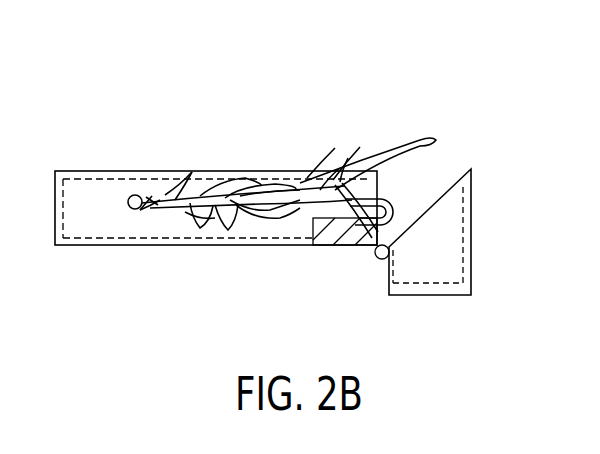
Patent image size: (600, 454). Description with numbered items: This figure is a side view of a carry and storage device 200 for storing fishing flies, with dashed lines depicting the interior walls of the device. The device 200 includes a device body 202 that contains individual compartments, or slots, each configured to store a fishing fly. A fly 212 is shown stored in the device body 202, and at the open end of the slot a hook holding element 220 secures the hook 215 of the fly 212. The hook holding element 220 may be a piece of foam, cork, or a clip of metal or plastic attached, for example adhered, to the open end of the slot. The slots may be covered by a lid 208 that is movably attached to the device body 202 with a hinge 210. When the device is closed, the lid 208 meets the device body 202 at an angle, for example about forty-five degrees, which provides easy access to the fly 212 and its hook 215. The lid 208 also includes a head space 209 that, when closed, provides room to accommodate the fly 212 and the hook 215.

The device 200 is at (285, 88).
The device body 202 is at (107, 171).
The lid 208 is at (471, 230).
The head space 209 is at (429, 277).
The hinge 210 is at (380, 261).
The fly 212 is at (211, 175).
The hook 215 is at (387, 203).
The hook holding element 220 is at (330, 236).